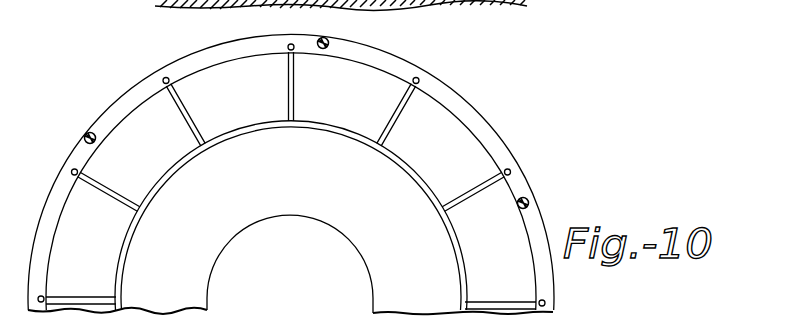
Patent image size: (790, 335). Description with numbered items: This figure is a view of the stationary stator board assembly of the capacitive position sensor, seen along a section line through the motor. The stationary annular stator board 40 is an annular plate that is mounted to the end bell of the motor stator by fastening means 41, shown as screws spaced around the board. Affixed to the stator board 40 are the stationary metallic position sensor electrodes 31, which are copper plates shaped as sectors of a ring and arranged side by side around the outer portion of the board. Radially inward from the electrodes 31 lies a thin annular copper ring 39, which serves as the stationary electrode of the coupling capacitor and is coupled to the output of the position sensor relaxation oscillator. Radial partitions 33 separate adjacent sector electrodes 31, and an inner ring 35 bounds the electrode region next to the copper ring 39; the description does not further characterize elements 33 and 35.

The stationary metallic position sensor electrodes 31 is at (291, 176).
The spokes / radial partitions 33 is at (418, 79).
The inner ring 35 is at (418, 188).
The stationary electrode of coupling capacitor 39 is at (290, 240).
The stationary annular stator board 40 is at (475, 119).
The fastening means 41 is at (330, 42).